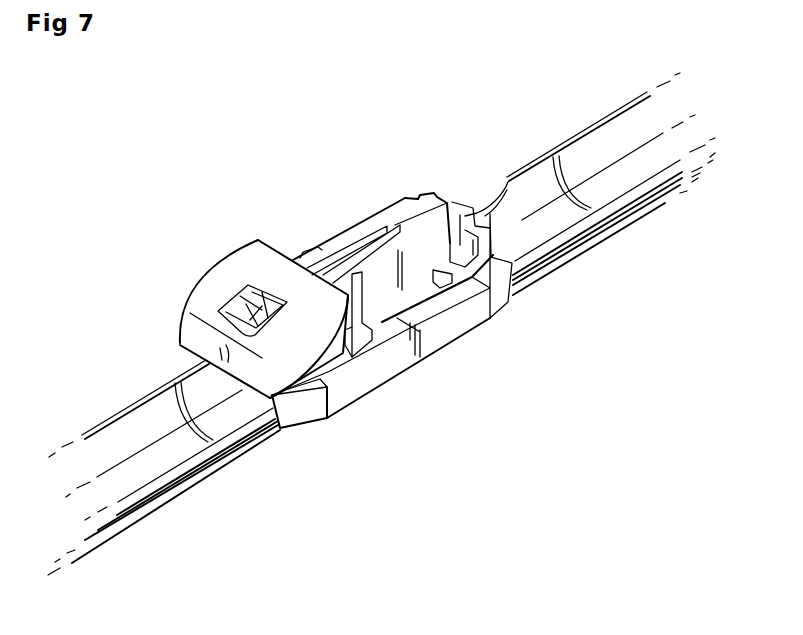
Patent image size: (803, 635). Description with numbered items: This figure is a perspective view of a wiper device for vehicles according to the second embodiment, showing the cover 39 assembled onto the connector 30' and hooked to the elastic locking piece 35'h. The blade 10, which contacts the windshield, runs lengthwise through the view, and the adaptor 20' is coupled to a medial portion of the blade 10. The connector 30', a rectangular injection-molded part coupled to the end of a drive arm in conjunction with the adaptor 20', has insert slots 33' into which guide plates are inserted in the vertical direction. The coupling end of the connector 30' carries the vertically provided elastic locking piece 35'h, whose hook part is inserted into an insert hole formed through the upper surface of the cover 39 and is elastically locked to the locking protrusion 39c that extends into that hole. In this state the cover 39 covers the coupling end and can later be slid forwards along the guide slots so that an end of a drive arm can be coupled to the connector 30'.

The blade 10 is at (144, 375).
The adaptor 20' is at (392, 321).
The connector 30' is at (344, 245).
The insert slots 33' is at (353, 224).
The elastic locking piece 35'h is at (213, 290).
The cover 39 is at (235, 273).
The locking protrusion 39c is at (268, 298).